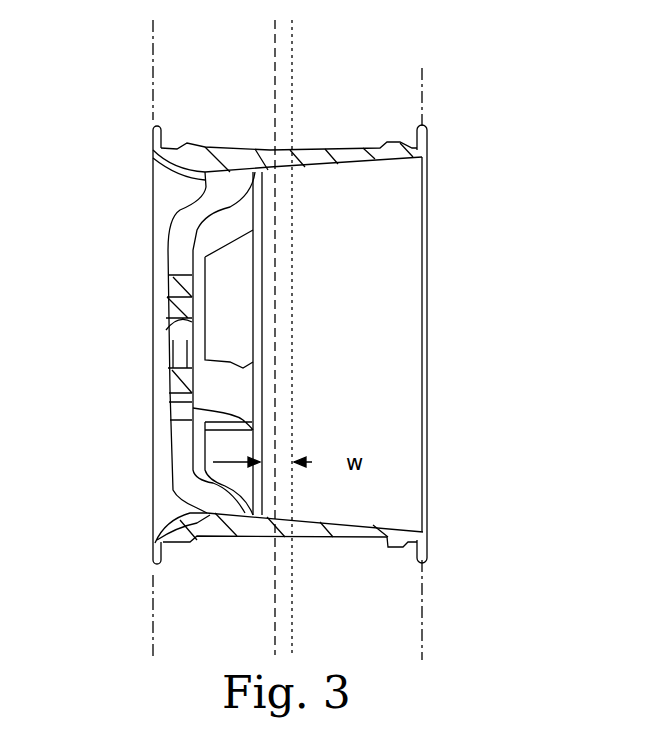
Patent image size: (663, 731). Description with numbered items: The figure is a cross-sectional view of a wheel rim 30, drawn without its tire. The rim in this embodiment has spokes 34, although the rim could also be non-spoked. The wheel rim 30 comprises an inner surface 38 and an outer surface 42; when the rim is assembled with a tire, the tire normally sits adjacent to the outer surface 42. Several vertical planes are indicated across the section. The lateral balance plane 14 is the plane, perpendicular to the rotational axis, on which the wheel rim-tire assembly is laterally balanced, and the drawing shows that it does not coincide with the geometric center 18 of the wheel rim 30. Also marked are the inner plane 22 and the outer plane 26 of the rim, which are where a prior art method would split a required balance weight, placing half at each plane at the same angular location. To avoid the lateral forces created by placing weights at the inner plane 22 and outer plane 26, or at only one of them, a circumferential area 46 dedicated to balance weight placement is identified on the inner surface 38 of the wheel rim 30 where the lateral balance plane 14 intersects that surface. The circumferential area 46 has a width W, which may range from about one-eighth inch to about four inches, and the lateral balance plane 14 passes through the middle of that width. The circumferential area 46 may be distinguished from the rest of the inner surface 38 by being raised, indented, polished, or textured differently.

The lateral balance plane 14 is at (275, 80).
The geometric center 18 is at (292, 62).
The inner plane 22 is at (422, 80).
The outer plane 26 is at (153, 40).
The wheel rim 30 is at (428, 225).
The spokes 34 is at (183, 263).
The inner surface 38 is at (220, 302).
The outer surface 42 is at (370, 145).
The circumferential area 46 is at (275, 227).